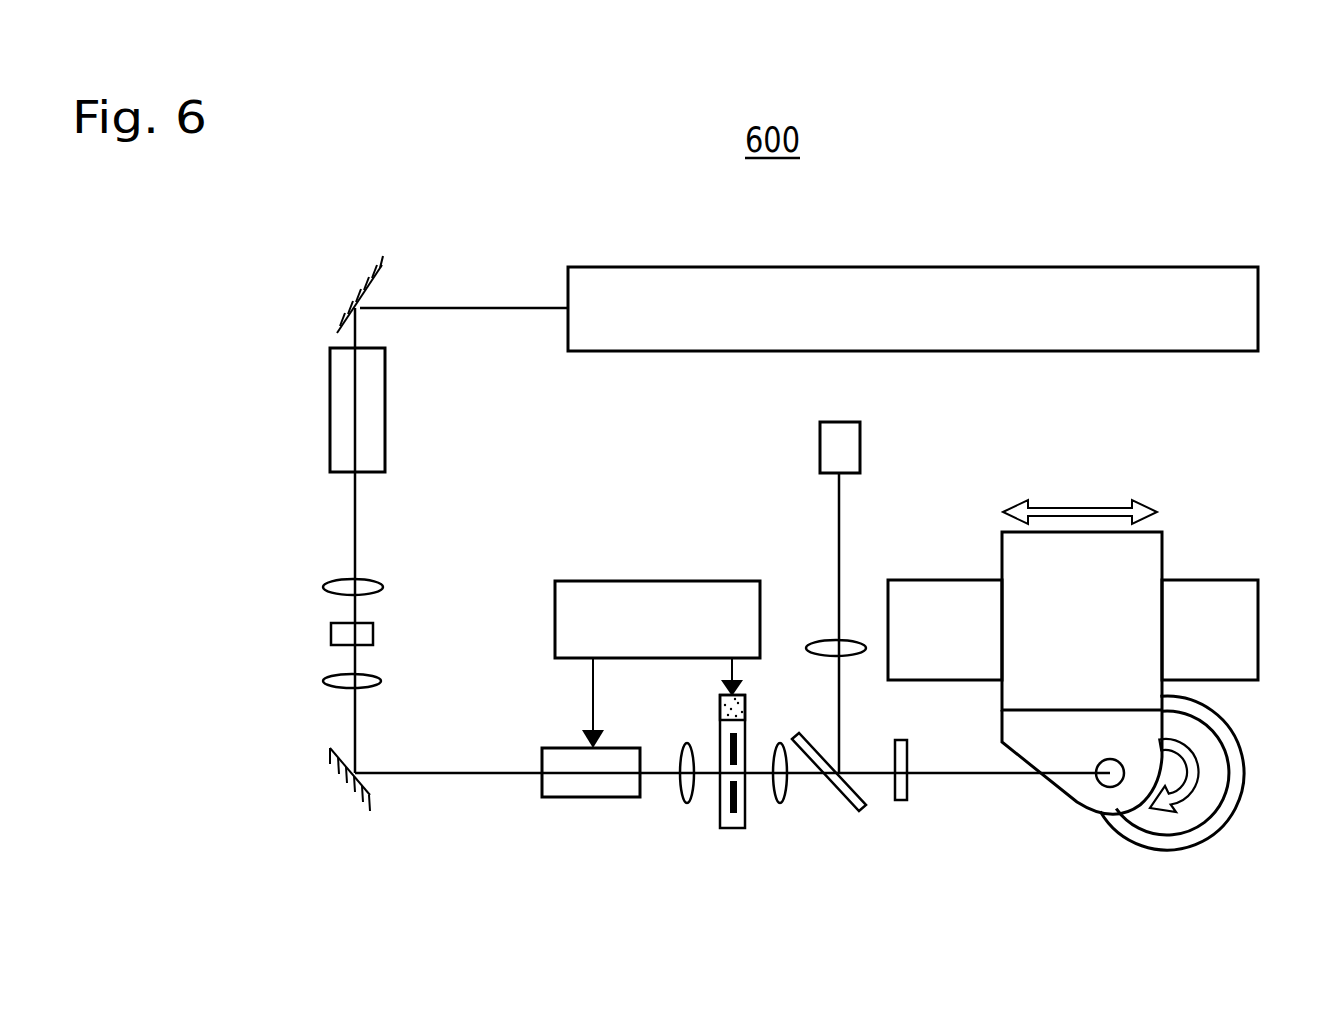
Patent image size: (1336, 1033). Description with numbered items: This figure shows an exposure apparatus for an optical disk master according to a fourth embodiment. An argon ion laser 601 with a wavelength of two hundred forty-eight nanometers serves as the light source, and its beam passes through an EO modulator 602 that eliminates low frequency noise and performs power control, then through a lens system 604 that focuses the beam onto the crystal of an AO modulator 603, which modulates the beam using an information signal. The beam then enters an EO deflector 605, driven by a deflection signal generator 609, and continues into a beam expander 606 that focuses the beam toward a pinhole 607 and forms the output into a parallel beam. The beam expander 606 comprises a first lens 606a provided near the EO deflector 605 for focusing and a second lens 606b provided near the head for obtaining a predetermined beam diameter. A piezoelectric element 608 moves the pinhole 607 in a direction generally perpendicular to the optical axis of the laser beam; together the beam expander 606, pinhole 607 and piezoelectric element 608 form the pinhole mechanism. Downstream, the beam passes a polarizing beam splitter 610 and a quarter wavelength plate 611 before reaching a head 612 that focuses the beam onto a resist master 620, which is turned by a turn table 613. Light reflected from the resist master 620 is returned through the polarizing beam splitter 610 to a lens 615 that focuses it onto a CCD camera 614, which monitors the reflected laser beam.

The argon ion laser 601 is at (1130, 277).
The EO modulator 602 is at (387, 428).
The AO modulator 603 is at (374, 633).
The lens system 604 is at (372, 580).
The EO deflector 605 is at (545, 797).
The beam expander 606 is at (721, 774).
The first lens 606a is at (684, 804).
The second lens 606b is at (780, 804).
The pinhole 607 is at (699, 797).
The piezoelectric element 608 is at (721, 700).
The deflection signal generator 609 is at (657, 581).
The polarizing beam splitter 610 is at (842, 815).
The 1/4 wavelength plate 611 is at (900, 803).
The head 612 is at (1157, 547).
The turn table 613 is at (1106, 832).
The CCD camera 614 is at (862, 437).
The lens 615 is at (855, 640).
The resist master 620 is at (1185, 735).